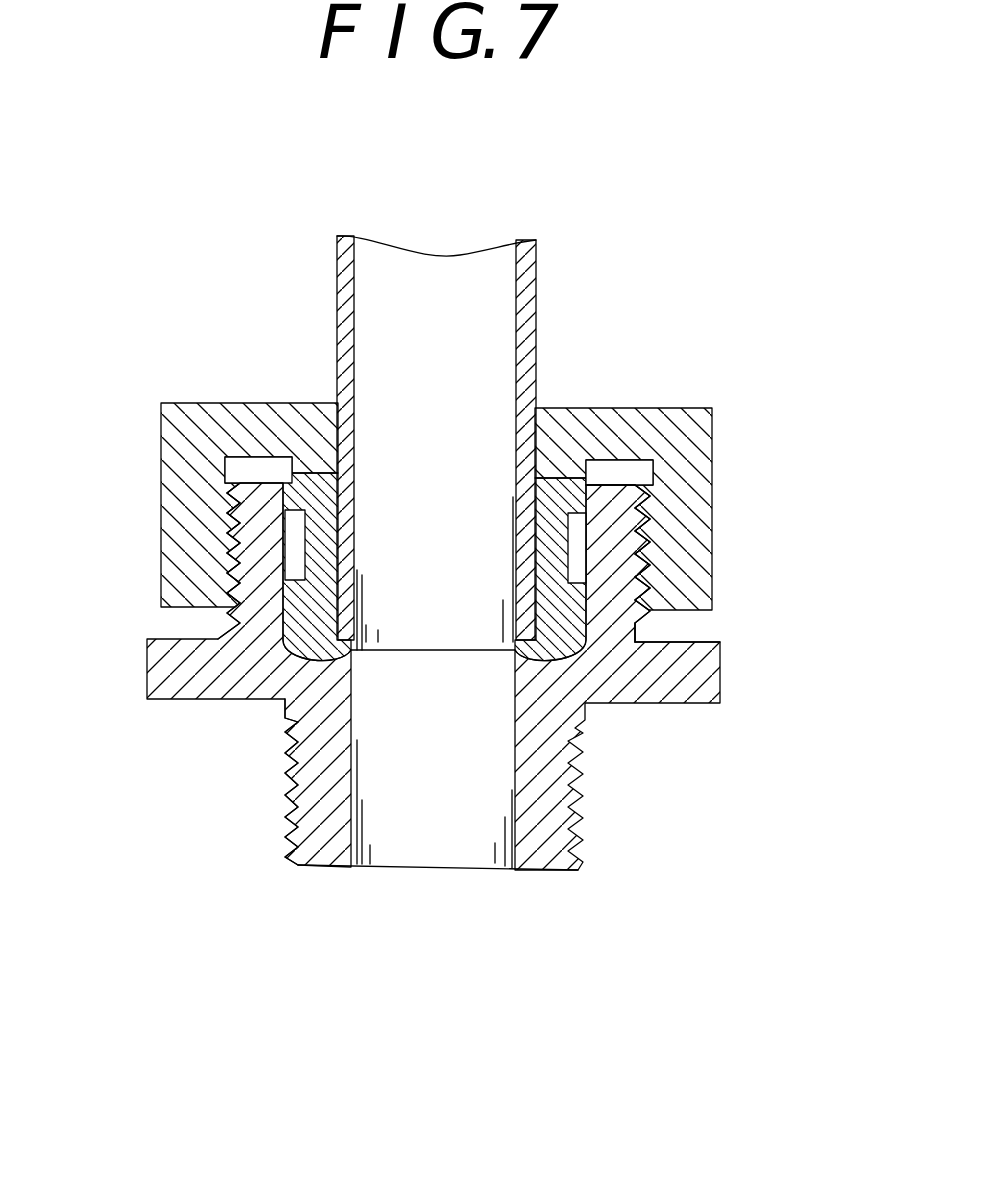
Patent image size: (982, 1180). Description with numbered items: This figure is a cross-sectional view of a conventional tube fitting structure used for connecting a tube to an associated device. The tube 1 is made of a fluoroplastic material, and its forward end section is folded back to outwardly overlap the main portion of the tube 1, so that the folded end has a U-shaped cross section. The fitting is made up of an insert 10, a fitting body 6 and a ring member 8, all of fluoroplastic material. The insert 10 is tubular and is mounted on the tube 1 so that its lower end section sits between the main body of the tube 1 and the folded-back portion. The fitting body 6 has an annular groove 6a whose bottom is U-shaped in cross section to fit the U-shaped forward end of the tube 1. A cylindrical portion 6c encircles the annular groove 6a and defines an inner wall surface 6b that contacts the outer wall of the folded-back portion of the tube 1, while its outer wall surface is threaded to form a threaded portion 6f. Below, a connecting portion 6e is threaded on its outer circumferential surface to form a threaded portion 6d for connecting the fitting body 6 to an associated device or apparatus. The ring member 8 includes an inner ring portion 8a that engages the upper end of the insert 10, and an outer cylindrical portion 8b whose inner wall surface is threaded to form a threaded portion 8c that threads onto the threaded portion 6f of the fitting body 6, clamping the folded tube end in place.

The tube 1 is at (338, 284).
The fitting body 6 is at (485, 724).
The annular groove 6a is at (563, 656).
The inner wall surface 6b is at (585, 525).
The cylindrical portion 6c is at (612, 582).
The threaded portion 6d is at (287, 800).
The connecting portion 6e is at (328, 857).
The threaded portion 6f is at (650, 630).
The ring member 8 is at (431, 438).
The inner ring portion 8a is at (313, 458).
The outer cylindrical portion 8b is at (170, 543).
The threaded portion 8c is at (233, 563).
The insert 10 is at (562, 485).